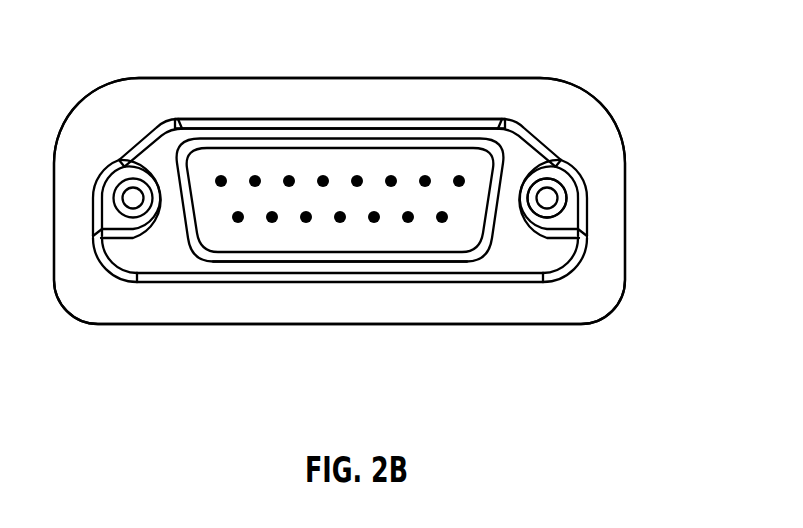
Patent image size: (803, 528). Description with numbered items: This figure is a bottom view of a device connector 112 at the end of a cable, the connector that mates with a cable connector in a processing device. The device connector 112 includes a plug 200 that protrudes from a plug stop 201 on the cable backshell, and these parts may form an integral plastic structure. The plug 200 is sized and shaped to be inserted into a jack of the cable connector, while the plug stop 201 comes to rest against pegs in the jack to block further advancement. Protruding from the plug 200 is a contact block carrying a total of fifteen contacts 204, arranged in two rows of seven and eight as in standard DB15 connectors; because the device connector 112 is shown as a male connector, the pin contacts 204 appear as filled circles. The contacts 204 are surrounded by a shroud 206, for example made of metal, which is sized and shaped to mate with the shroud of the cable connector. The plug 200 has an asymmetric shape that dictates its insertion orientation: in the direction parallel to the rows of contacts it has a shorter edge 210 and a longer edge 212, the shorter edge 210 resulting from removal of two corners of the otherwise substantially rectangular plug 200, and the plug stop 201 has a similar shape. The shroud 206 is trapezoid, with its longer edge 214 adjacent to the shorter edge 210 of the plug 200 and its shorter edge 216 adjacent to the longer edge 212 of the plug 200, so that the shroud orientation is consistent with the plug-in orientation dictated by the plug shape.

The device connector 112 is at (595, 32).
The plug 200 is at (366, 206).
The plug stop 201 is at (613, 141).
The contacts 204 is at (272, 223).
The shroud 206 is at (496, 256).
The shorter edge 210 is at (427, 124).
The longer edge 212 is at (337, 283).
The longer edge of the shroud 214 is at (313, 143).
The shorter edge of the shroud 216 is at (448, 256).